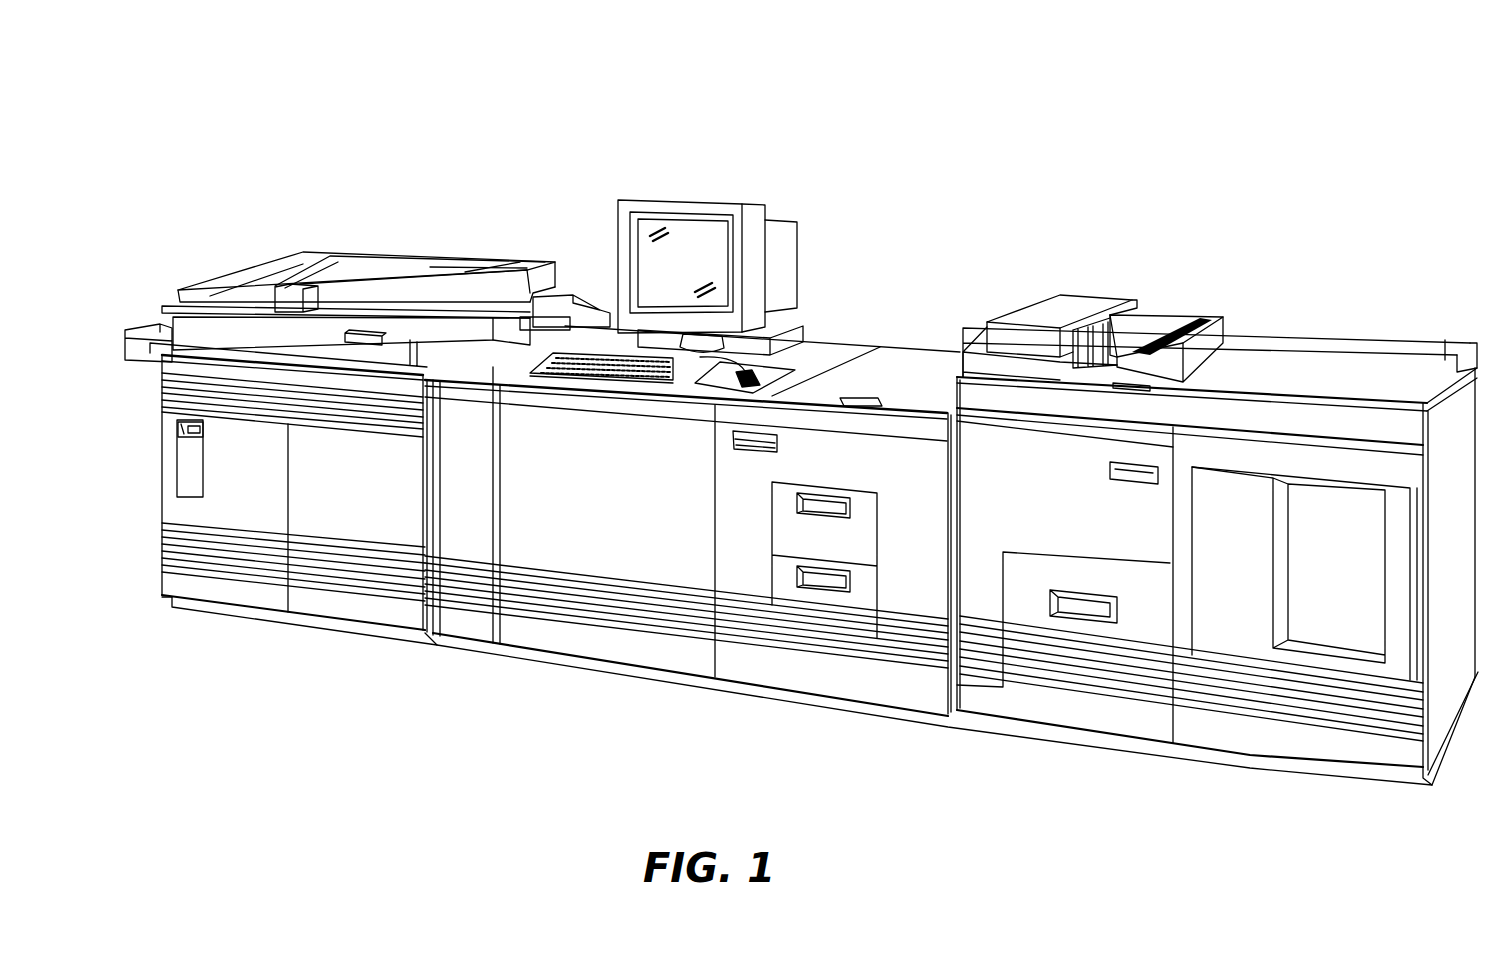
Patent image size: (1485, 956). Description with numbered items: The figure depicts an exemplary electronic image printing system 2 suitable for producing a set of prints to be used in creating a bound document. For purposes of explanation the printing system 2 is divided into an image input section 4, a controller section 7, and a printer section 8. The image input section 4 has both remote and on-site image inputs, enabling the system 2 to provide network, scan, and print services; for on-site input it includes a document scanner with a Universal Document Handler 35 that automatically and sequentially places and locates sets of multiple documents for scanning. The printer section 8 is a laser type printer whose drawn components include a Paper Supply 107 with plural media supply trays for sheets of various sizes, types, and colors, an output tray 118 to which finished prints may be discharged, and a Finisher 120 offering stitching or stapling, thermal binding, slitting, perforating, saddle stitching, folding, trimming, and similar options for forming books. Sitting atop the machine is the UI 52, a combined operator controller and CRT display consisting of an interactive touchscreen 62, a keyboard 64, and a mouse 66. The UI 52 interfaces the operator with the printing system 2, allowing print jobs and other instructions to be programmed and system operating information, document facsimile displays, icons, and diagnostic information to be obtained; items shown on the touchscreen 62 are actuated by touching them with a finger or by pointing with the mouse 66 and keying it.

The image printing system 2 is at (882, 100).
The image input section 4 is at (400, 224).
The controller section 7 is at (148, 510).
The printer section 8 is at (910, 266).
The Universal Document Handler 35 is at (266, 283).
The UI 52 is at (708, 186).
The interactive touchscreen 62 is at (650, 272).
The keyboard 64 is at (617, 384).
The mouse 66 is at (716, 402).
The Paper Supply 107 is at (1044, 596).
The output tray 118 is at (1162, 312).
The Finisher 120 is at (1262, 735).